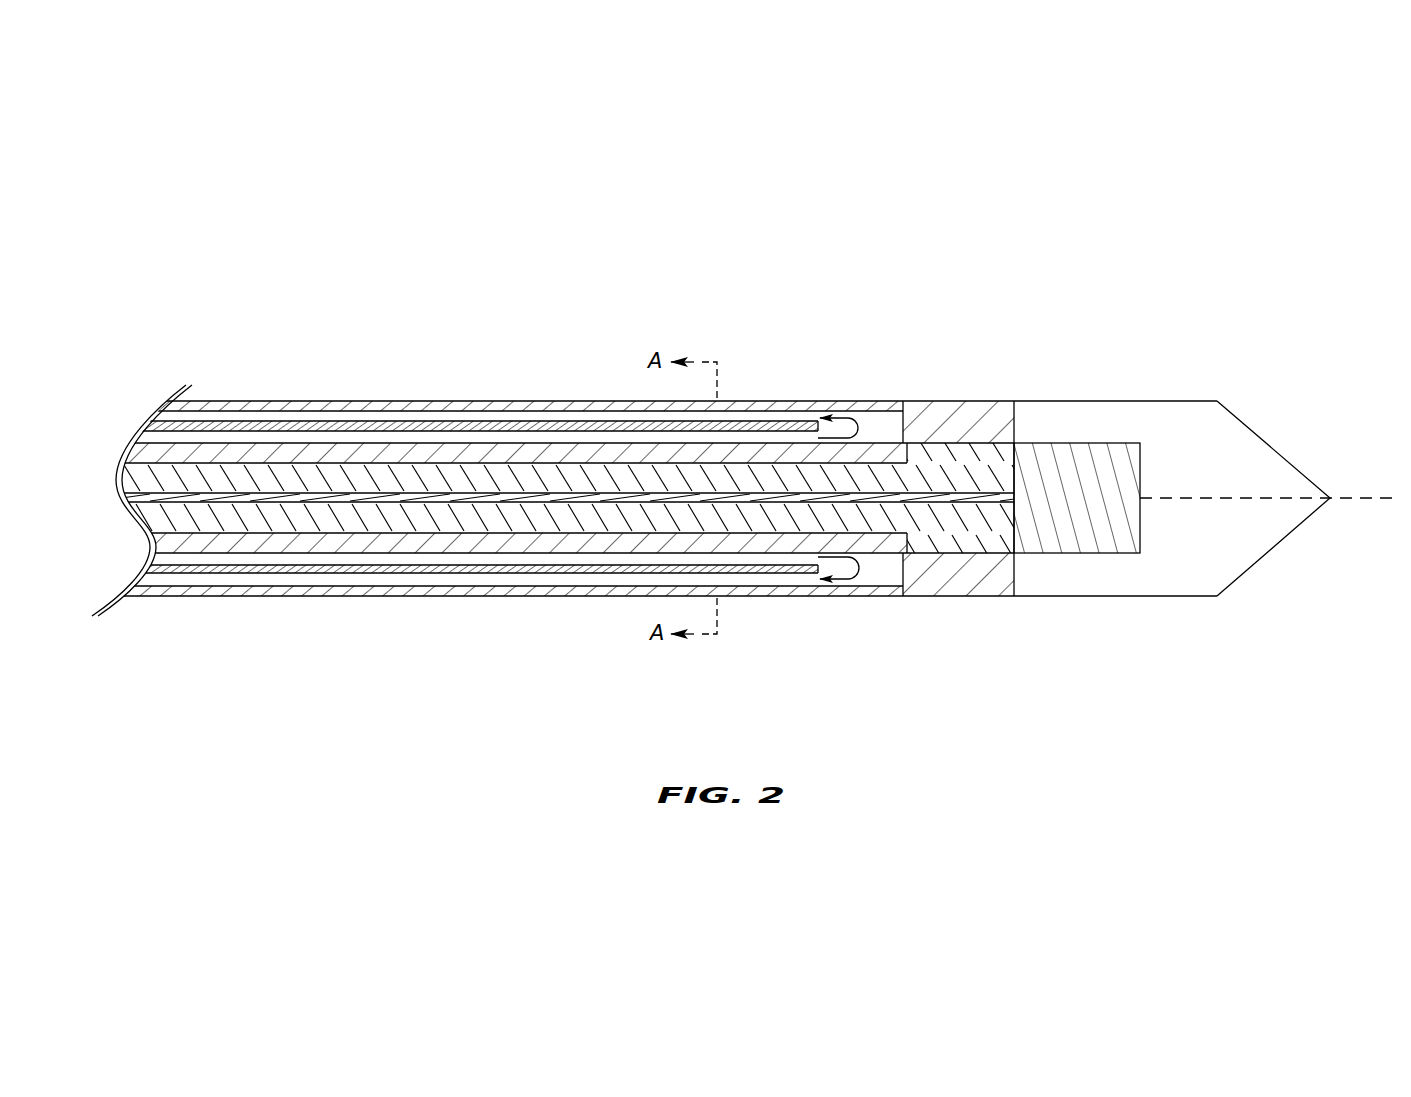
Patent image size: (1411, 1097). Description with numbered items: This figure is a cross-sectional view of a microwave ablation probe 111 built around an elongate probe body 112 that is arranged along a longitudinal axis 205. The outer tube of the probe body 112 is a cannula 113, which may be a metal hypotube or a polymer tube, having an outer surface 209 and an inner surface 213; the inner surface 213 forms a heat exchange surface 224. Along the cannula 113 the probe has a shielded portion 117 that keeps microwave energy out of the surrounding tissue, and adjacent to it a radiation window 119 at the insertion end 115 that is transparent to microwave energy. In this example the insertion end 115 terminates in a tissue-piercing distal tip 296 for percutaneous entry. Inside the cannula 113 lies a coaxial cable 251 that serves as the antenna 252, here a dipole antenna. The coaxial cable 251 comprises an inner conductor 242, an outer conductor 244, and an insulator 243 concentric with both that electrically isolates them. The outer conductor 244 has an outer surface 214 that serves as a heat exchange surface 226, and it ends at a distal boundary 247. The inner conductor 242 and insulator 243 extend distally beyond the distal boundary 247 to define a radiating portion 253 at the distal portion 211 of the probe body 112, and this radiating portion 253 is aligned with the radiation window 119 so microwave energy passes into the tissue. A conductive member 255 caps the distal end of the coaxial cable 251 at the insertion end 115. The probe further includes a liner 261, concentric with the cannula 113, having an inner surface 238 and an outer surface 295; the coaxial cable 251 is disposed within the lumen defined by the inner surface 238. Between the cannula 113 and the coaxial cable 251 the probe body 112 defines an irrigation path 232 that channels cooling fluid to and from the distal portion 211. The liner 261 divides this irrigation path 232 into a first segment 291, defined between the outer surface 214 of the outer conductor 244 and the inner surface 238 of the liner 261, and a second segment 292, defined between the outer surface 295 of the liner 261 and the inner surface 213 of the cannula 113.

The microwave ablation probe 111 is at (706, 485).
The probe body 112 is at (515, 485).
The cannula 113 is at (389, 592).
The insertion end 115 is at (1181, 474).
The shielded portion 117 is at (340, 408).
The radiation window 119 is at (934, 430).
The longitudinal axis 205 is at (1367, 500).
The outer surface 209 is at (496, 509).
The distal portion 211 is at (1181, 439).
The inner surface 213 is at (106, 500).
The outer surface 214 is at (393, 436).
The heat exchange surface 224 is at (140, 462).
The heat exchange surface 226 is at (311, 556).
The irrigation path 232 is at (870, 428).
The inner surface 238 is at (777, 442).
The inner conductor 242 is at (240, 500).
The insulator 243 is at (533, 478).
The outer conductor 244 is at (493, 542).
The distal boundary 247 is at (909, 544).
The coaxial cable 251 is at (833, 526).
The antenna 252 is at (988, 463).
The radiating portion 253 is at (989, 529).
The conductive member 255 is at (1093, 462).
The liner 261 is at (453, 432).
The first segment 291 is at (163, 553).
The second segment 292 is at (165, 583).
The outer surface 295 is at (434, 575).
The tissue-piercing distal tip 296 is at (1272, 447).